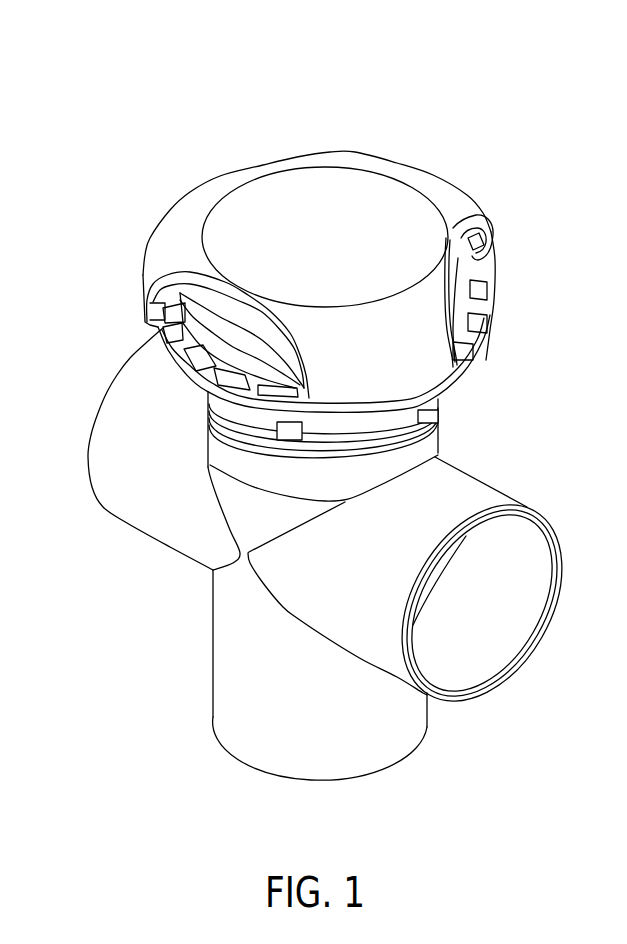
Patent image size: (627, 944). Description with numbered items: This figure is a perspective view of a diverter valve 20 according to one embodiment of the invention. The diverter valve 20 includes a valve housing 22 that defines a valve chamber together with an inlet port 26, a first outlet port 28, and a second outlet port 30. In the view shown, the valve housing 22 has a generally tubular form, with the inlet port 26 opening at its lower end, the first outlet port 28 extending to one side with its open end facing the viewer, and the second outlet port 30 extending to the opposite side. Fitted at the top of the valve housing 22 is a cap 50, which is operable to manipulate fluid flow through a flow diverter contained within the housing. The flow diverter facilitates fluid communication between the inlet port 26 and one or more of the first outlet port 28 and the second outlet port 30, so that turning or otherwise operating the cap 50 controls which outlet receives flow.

The diverter valve 20 is at (315, 460).
The valve housing 22 is at (247, 635).
The inlet port 26 is at (327, 793).
The first outlet port 28 is at (497, 618).
The second outlet port 30 is at (98, 376).
The cap 50 is at (457, 202).